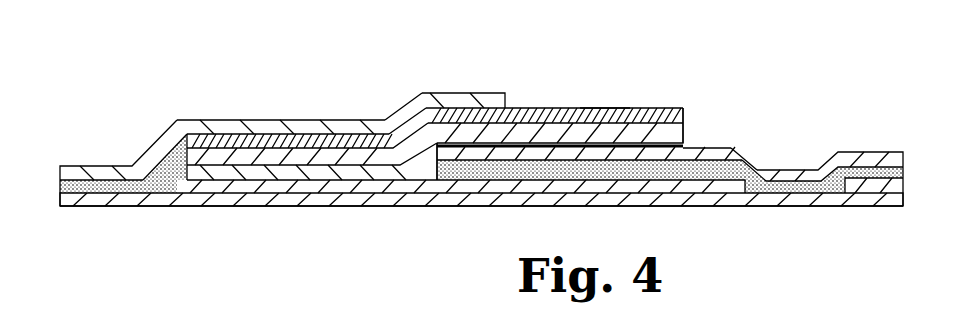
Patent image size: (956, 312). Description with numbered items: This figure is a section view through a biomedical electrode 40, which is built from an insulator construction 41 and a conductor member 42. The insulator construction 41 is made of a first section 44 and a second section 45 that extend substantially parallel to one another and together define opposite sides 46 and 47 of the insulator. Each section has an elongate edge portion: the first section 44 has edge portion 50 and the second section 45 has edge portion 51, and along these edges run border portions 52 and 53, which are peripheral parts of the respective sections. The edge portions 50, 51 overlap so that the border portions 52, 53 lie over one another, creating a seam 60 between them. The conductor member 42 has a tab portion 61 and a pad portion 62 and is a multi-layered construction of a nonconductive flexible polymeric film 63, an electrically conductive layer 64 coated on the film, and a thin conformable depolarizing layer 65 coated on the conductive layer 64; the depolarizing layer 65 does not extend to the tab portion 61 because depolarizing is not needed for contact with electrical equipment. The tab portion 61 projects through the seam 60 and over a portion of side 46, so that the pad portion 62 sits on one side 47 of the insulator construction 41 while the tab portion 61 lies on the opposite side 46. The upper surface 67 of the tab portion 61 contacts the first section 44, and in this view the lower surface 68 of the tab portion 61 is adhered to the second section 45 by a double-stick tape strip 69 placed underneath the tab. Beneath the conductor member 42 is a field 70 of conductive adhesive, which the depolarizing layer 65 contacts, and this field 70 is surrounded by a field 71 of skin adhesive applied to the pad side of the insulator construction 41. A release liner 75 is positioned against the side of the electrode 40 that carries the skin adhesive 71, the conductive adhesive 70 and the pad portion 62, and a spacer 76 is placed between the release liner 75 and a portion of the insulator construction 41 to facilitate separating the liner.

The electrode 40 is at (724, 66).
The insulator construction 41 is at (142, 127).
The conductor member 42 is at (710, 112).
The first section 44 is at (383, 118).
The second section 45 is at (716, 148).
The first side 46 is at (319, 119).
The second side 47 is at (355, 134).
The elongate edge portion of first section 50 is at (507, 104).
The elongate edge portion of second section 51 is at (432, 150).
The border portion of first section 52 is at (490, 107).
The border portion of second section 53 is at (540, 150).
The seam 60 is at (466, 93).
The tab portion 61 is at (603, 98).
The pad portion 62 is at (200, 117).
The polymeric film 63 is at (237, 140).
The electrically conductive layer 64 is at (283, 153).
The depolarizing layer 65 is at (307, 171).
The upper surface of tab portion 67 is at (632, 125).
The lower surface of tab portion 68 is at (664, 140).
The double-stick tape strip 69 is at (455, 147).
The field of conductive adhesive 70 is at (383, 188).
The field of skin adhesive 71 is at (158, 177).
The release liner 75 is at (843, 198).
The spacer 76 is at (890, 185).